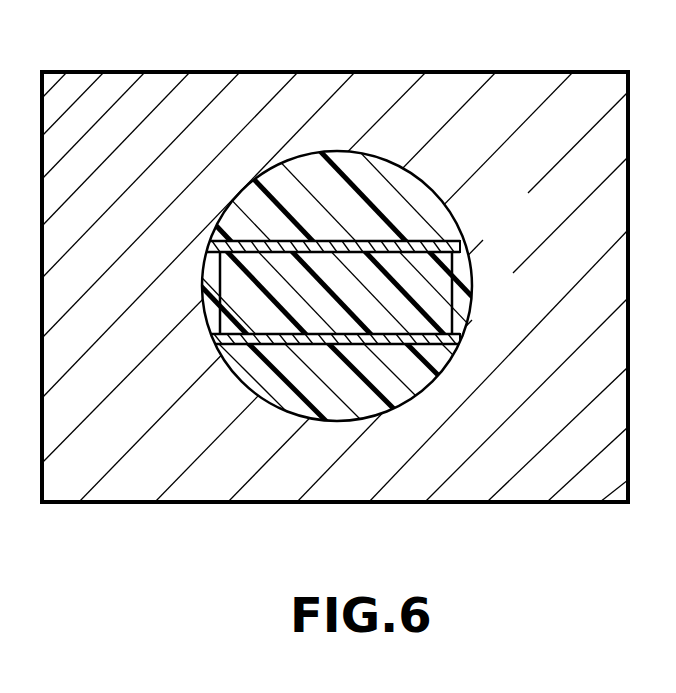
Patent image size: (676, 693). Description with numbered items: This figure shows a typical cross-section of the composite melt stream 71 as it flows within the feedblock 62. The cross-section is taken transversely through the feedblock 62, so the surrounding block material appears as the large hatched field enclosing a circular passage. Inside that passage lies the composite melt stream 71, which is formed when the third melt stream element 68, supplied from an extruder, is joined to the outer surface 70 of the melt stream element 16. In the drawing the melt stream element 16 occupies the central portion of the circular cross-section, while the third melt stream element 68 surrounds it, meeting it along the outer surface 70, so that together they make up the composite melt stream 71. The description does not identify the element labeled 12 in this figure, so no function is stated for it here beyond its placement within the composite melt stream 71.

The feedblock 62 is at (430, 503).
The third melt stream element 68 is at (350, 151).
The outer surface 70 is at (394, 240).
The melt stream element 16 is at (461, 236).
The core member 12 is at (450, 297).
The composite melt stream 71 is at (305, 421).